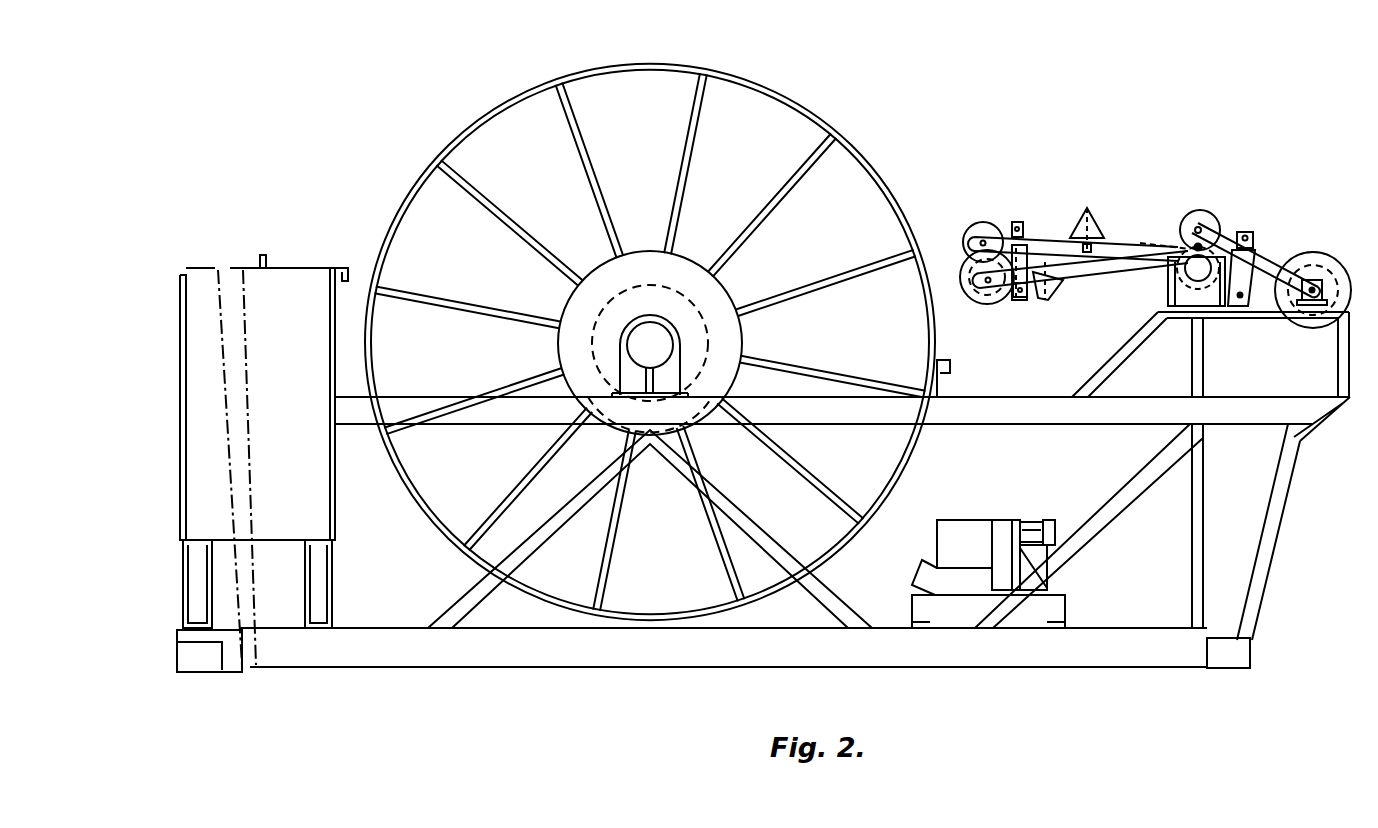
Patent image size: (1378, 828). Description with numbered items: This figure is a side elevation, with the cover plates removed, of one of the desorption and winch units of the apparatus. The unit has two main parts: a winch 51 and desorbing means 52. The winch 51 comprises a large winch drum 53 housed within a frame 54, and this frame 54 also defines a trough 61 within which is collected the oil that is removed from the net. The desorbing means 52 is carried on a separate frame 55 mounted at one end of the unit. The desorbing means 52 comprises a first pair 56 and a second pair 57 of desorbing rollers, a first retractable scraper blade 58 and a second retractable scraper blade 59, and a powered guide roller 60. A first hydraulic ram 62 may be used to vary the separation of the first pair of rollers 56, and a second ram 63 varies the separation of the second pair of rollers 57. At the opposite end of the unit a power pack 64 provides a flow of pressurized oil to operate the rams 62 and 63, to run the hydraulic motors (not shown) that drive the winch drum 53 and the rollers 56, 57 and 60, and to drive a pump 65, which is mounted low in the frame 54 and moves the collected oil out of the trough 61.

The winch 51 is at (436, 154).
The desorbing means 52 is at (1237, 210).
The winch drum 53 is at (677, 292).
The frame 54 is at (432, 406).
The frame 55 is at (1145, 330).
The first pair of desorbing rollers 56 is at (1189, 213).
The second pair of desorbing rollers 57 is at (962, 247).
The first retractable scraper blade 58 is at (1097, 216).
The second retractable scraper blade 59 is at (1054, 281).
The powered guide roller 60 is at (1317, 270).
The trough 61 is at (1237, 566).
The first hydraulic ram 62 is at (1256, 246).
The second ram 63 is at (1019, 244).
The power pack 64 is at (244, 270).
The pump 65 is at (977, 531).